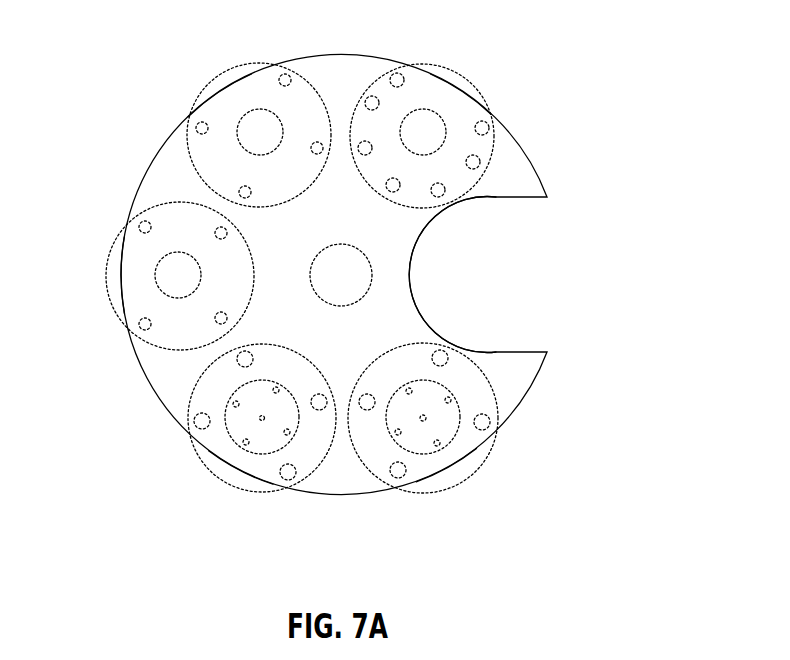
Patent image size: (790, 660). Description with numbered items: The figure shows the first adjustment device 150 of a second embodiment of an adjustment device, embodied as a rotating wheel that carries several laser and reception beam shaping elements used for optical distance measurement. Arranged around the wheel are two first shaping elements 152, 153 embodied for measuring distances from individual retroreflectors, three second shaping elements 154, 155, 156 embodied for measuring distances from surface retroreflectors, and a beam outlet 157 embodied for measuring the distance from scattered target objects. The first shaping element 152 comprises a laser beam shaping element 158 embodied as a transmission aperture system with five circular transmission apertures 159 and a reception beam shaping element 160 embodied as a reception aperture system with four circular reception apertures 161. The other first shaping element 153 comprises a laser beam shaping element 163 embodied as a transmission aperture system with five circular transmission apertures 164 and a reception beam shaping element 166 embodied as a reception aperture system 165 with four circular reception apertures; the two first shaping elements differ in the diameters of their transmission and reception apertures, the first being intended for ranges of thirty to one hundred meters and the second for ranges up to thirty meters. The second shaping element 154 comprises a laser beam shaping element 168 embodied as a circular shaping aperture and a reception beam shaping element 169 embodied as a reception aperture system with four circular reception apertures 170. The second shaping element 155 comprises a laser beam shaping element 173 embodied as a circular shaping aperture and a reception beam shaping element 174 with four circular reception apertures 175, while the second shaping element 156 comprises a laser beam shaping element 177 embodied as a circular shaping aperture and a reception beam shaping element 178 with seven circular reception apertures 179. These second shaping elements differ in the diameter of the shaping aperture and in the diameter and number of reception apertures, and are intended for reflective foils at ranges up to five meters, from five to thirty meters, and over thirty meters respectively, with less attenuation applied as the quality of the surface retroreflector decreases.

The first adjustment device 150 is at (620, 131).
The first shaping element 152 is at (465, 497).
The first shaping element 153 is at (228, 496).
The second shaping element 154 is at (97, 264).
The second shaping element 155 is at (200, 68).
The second shaping element 156 is at (474, 76).
The beam outlet 157 is at (517, 276).
The laser beam shaping element 158 is at (416, 448).
The transmission apertures 159 is at (423, 414).
The reception beam shaping element 160 is at (390, 373).
The reception apertures 161 is at (482, 430).
The laser beam shaping element 163 is at (236, 434).
The transmission apertures 164 is at (278, 388).
The reception aperture system 165 is at (192, 405).
The reception beam shaping element 166 is at (288, 480).
The laser beam shaping element 168 is at (163, 286).
The reception beam shaping element 169 is at (239, 261).
The reception apertures 170 is at (139, 325).
The laser beam shaping element 173 is at (245, 143).
The reception beam shaping element 174 is at (276, 189).
The reception apertures 175 is at (286, 74).
The laser beam shaping element 177 is at (408, 143).
The reception beam shaping element 178 is at (417, 186).
The reception apertures 179 is at (397, 73).